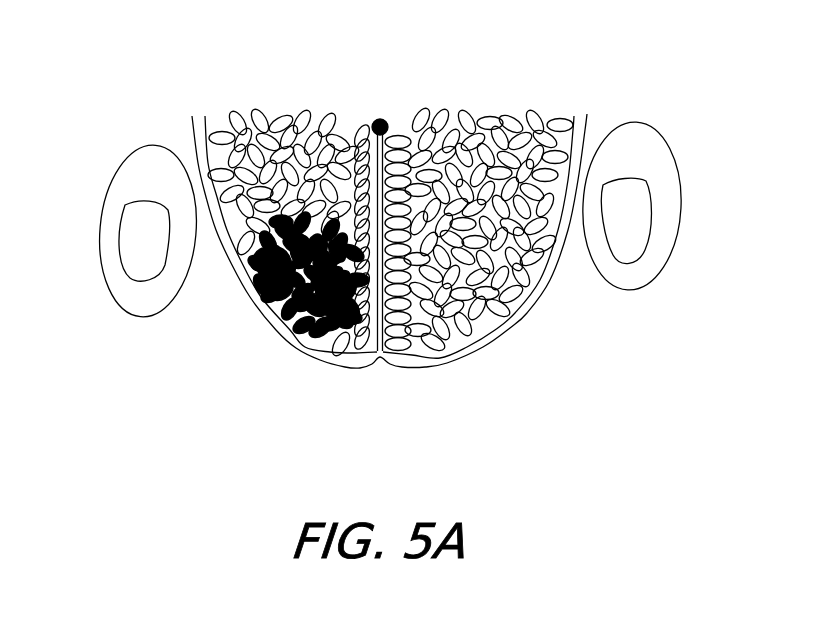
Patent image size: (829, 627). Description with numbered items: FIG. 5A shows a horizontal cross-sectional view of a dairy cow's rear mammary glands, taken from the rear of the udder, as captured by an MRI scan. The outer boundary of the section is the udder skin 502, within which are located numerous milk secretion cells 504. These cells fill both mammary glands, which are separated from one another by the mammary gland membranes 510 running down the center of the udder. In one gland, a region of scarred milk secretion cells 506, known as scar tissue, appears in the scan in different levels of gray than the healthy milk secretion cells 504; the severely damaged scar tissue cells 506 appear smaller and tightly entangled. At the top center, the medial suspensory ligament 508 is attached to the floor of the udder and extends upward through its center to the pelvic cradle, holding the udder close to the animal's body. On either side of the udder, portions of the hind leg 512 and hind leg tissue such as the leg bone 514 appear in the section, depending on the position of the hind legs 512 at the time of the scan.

The udder skin 502 is at (405, 370).
The milk secretion cells 504 is at (470, 272).
The scarred milk secretion cells 506 is at (282, 315).
The medial suspensory ligament 508 is at (388, 118).
The mammary gland membranes 510 is at (362, 122).
The hind leg 512 is at (102, 220).
The leg bone 514 is at (138, 220).